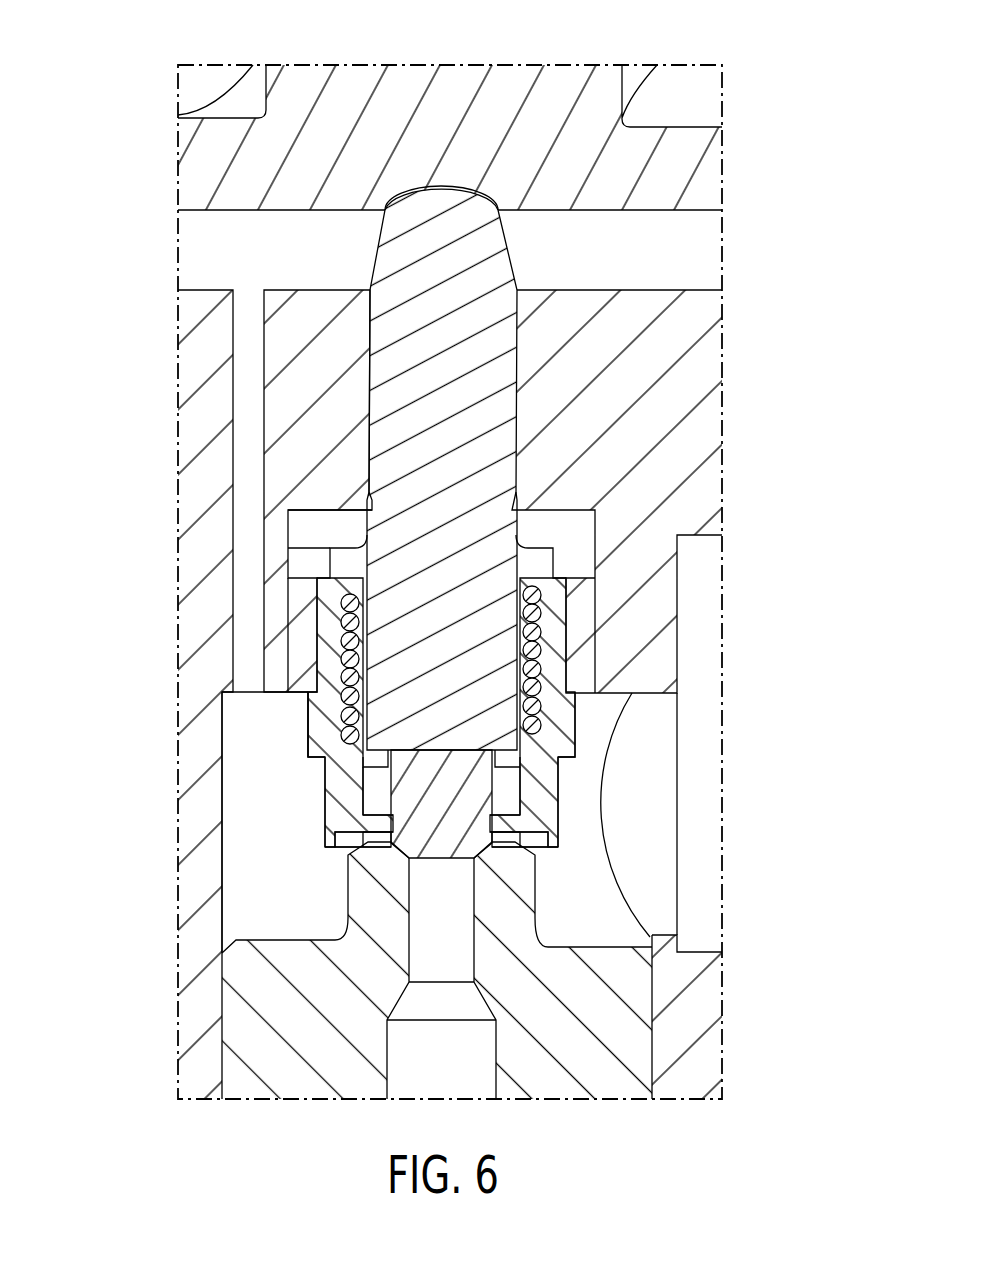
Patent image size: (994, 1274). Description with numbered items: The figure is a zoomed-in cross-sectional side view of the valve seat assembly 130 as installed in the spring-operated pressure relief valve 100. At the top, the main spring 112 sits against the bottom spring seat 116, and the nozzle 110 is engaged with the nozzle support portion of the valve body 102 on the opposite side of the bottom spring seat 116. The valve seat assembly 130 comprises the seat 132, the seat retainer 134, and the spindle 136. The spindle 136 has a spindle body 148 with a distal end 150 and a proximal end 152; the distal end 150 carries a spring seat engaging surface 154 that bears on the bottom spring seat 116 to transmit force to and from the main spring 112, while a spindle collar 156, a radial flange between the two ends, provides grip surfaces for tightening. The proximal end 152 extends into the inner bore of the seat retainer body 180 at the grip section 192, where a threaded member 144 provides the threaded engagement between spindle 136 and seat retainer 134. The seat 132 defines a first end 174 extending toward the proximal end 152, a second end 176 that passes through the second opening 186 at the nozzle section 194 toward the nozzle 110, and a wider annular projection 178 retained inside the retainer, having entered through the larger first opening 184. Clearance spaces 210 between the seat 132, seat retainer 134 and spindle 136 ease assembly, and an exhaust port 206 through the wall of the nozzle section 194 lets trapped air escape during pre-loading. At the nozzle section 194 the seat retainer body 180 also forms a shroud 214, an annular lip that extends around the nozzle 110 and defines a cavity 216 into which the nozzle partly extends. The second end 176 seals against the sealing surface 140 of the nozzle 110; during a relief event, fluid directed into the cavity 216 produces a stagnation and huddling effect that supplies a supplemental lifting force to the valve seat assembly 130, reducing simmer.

The spring-operated pressure relief valve 100 is at (158, 151).
The valve body 102 is at (205, 332).
The nozzle 110 is at (262, 1002).
The main spring 112 is at (190, 97).
The bottom spring seat 116 is at (690, 155).
The valve seat assembly 130 is at (343, 421).
The seat 132 is at (363, 780).
The seat retainer 134 is at (320, 655).
The spindle 136 is at (487, 272).
The sealing surface 140 is at (400, 847).
The threaded member 144 is at (530, 630).
The spindle body 148 is at (517, 395).
The distal end 150 is at (491, 192).
The proximal end 152 is at (524, 745).
The spring seat engaging surface 154 is at (443, 188).
The spindle collar 156 is at (330, 548).
The first end 174 is at (444, 755).
The second end 176 is at (432, 862).
The annular projection 178 is at (363, 795).
The seat retainer body 180 is at (308, 715).
The first opening 184 is at (525, 580).
The second opening 186 is at (503, 807).
The grip section 192 is at (565, 600).
The nozzle section 194 is at (325, 822).
The exhaust port 206 is at (539, 787).
The clearance spaces 210 is at (360, 759).
The shroud 214 is at (320, 840).
The cavity 216 is at (537, 851).